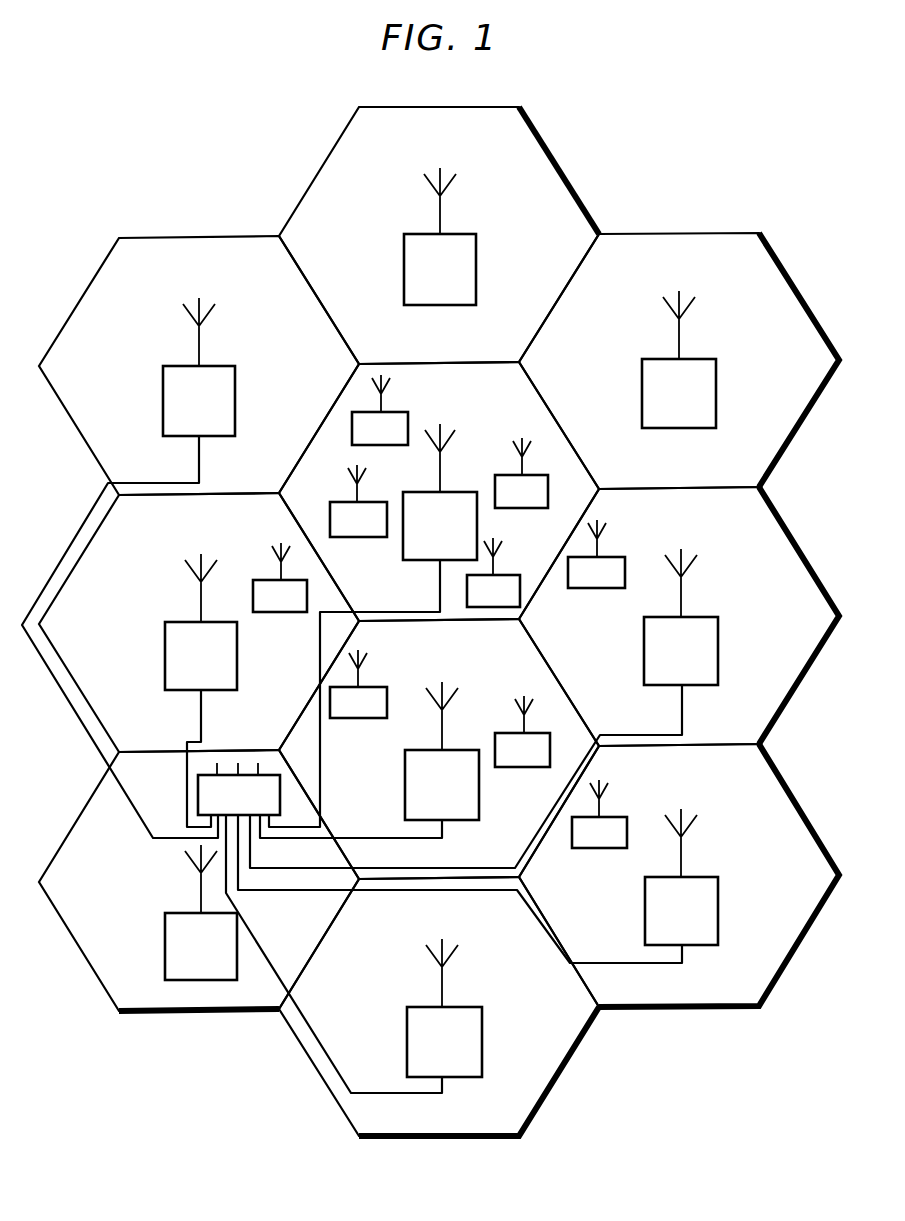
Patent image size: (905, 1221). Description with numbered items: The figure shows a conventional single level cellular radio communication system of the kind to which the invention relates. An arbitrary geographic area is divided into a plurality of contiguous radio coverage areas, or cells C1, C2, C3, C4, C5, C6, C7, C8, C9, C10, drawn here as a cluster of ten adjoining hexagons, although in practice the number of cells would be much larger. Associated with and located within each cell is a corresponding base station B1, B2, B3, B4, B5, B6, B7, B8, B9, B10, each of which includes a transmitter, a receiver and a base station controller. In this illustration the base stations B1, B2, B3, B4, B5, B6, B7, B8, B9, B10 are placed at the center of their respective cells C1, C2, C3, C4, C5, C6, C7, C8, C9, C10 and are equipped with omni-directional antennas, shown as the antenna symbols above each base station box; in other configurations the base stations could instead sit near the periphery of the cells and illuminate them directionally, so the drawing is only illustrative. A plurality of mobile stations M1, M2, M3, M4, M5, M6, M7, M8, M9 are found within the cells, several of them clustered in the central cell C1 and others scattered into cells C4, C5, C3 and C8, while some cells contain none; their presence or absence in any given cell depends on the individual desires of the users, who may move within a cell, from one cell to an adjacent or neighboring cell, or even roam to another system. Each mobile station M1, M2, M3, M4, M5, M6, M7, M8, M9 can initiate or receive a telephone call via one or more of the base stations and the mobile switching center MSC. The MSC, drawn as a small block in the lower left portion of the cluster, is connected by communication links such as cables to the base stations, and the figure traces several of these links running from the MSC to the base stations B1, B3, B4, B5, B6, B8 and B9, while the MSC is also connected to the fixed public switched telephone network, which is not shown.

The cell C1 is at (379, 607).
The cell C2 is at (628, 480).
The cell C3 is at (629, 733).
The cell C4 is at (383, 865).
The cell C5 is at (145, 742).
The cell C6 is at (141, 481).
The cell C7 is at (381, 354).
The cell C8 is at (629, 999).
The cell C9 is at (389, 1129).
The cell C10 is at (154, 997).
The base station B1 is at (373, 625).
The base station B2 is at (679, 359).
The base station B3 is at (484, 708).
The base station B4 is at (369, 760).
The base station B5 is at (201, 690).
The base station B6 is at (128, 568).
The base station B7 is at (440, 236).
The base station B8 is at (478, 886).
The base station B9 is at (354, 954).
The base station B10 is at (201, 912).
The mobile station M1 is at (599, 814).
The mobile station M2 is at (280, 577).
The mobile station M3 is at (358, 501).
The mobile station M4 is at (521, 473).
The mobile station M5 is at (596, 554).
The mobile station M6 is at (380, 410).
The mobile station M7 is at (493, 572).
The mobile station M8 is at (522, 731).
The mobile station M9 is at (358, 684).
The mobile switching center MSC is at (239, 789).